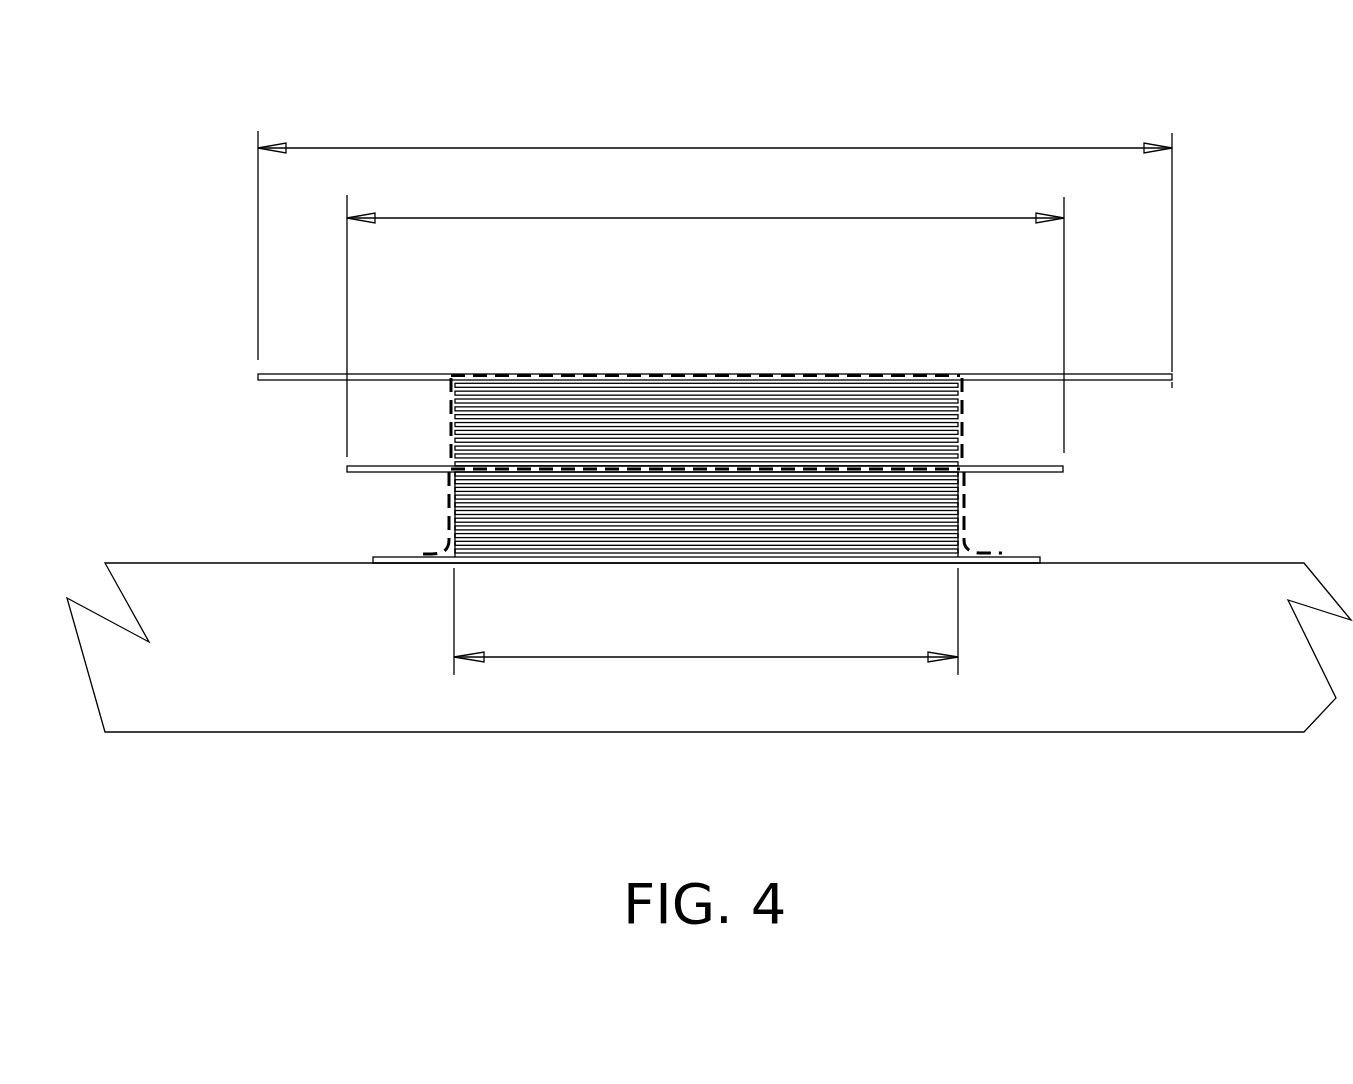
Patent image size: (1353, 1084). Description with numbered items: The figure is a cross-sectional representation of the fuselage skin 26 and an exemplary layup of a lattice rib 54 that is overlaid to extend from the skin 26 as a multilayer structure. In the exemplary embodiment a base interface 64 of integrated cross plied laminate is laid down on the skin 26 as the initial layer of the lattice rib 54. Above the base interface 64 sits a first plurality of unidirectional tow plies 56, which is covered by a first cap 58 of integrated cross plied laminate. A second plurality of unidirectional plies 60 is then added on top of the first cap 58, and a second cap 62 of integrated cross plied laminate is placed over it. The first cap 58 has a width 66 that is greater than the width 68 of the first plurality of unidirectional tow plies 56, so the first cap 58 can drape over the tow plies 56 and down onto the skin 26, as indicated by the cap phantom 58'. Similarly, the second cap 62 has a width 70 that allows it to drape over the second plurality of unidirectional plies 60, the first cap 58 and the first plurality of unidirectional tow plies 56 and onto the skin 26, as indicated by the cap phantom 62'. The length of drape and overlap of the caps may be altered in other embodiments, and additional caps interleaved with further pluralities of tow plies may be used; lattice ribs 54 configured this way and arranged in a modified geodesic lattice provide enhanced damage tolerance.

The skin 26 is at (1187, 663).
The lattice rib 54 is at (740, 315).
The first plurality of unidirectional tow plies 56 is at (527, 517).
The first cap 58 is at (656, 440).
The cap phantom 58' is at (783, 511).
The second plurality of unidirectional plies 60 is at (490, 422).
The second cap 62 is at (715, 336).
The cap phantom 62' is at (815, 420).
The base interface 64 is at (384, 557).
The width 66 is at (548, 218).
The width 68 is at (680, 657).
The width 70 is at (428, 148).